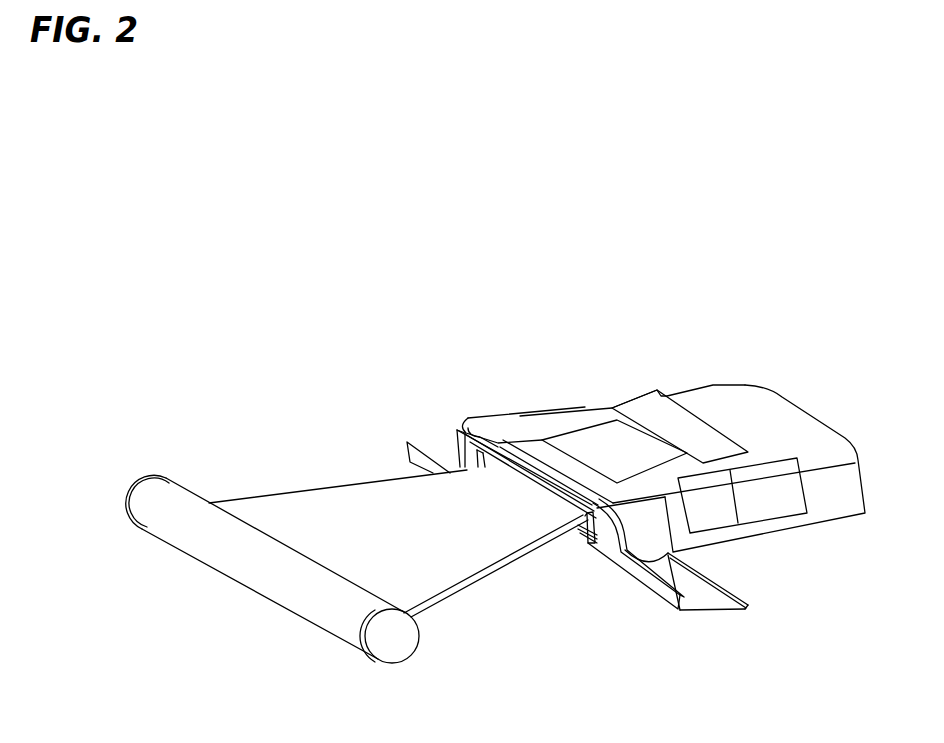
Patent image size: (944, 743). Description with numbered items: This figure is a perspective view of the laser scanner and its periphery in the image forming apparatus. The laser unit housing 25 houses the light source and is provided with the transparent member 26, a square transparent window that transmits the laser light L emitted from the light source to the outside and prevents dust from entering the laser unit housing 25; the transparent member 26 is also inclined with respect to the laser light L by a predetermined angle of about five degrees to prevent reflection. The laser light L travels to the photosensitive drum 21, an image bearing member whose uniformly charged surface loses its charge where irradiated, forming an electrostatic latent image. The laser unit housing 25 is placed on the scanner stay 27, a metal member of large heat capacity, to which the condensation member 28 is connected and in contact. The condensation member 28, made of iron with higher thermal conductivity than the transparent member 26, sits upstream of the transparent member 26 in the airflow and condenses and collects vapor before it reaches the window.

The photosensitive drum 21 is at (287, 595).
The laser light L is at (283, 508).
The laser unit housing 25 is at (507, 430).
The transparent member 26 is at (587, 530).
The scanner stay 27 is at (700, 597).
The condensation member 28 is at (608, 547).